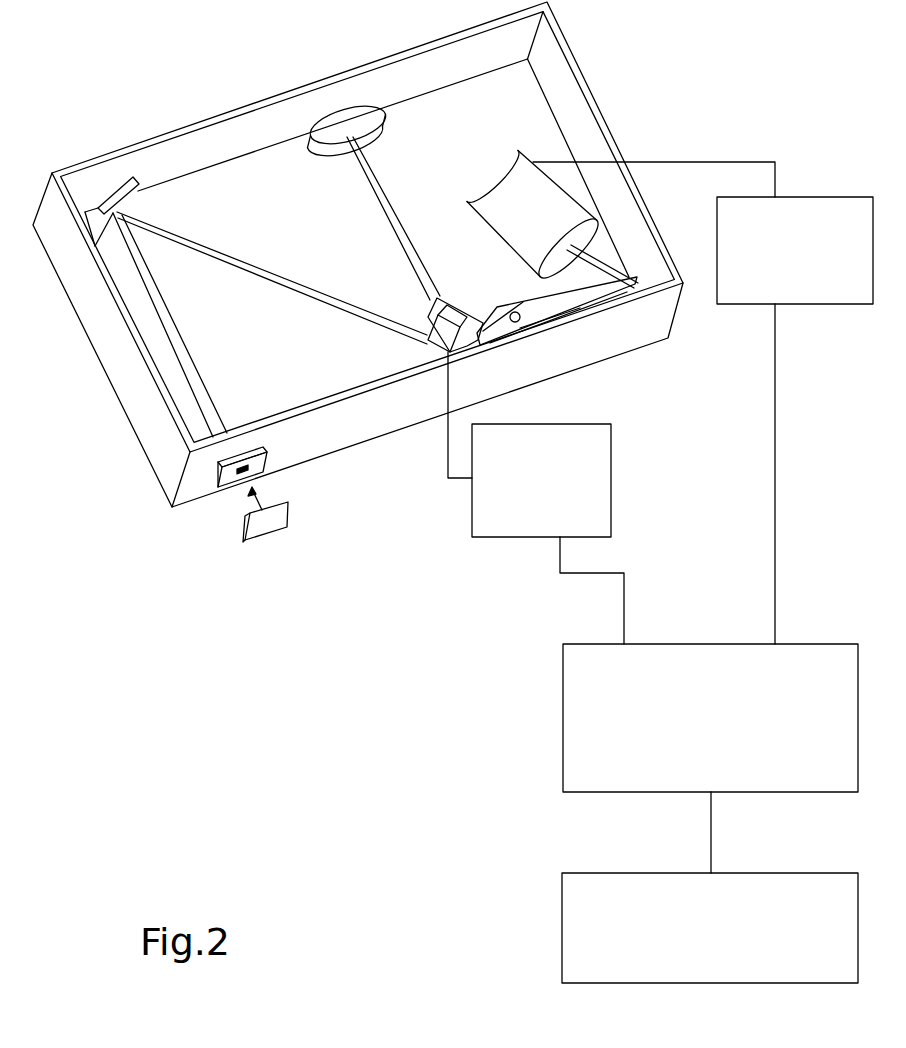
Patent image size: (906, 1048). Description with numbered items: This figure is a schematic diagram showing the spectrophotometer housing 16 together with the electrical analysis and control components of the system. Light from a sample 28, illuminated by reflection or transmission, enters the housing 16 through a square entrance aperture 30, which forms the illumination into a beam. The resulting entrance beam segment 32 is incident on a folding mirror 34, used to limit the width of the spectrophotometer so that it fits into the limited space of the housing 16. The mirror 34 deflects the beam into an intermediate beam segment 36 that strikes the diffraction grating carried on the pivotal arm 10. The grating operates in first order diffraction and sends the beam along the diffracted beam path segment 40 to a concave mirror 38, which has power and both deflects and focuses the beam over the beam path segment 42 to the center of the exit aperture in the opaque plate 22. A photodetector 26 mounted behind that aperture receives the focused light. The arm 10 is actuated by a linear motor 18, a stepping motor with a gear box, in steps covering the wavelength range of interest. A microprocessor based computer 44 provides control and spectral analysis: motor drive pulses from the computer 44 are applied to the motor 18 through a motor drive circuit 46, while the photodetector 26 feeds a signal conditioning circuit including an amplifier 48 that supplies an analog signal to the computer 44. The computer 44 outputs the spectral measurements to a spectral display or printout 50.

The arm 10 is at (577, 303).
The housing 16 is at (140, 408).
The linear motor 18 is at (512, 149).
The plate 22 is at (480, 350).
The photodetector 26 is at (424, 333).
The sample 28 is at (285, 525).
The entrance aperture 30 is at (233, 477).
The entrance beam segment 32 is at (167, 307).
The folding mirror 34 is at (135, 198).
The intermediate beam segment 36 is at (333, 303).
The concave mirror 38 is at (375, 143).
The diffracted beam path segment 40 is at (398, 241).
The beam path segment 42 is at (406, 233).
The computer 44 is at (735, 643).
The motor drive circuit 46 is at (787, 197).
The amplifier 48 is at (508, 538).
The spectral display or printout 50 is at (562, 903).